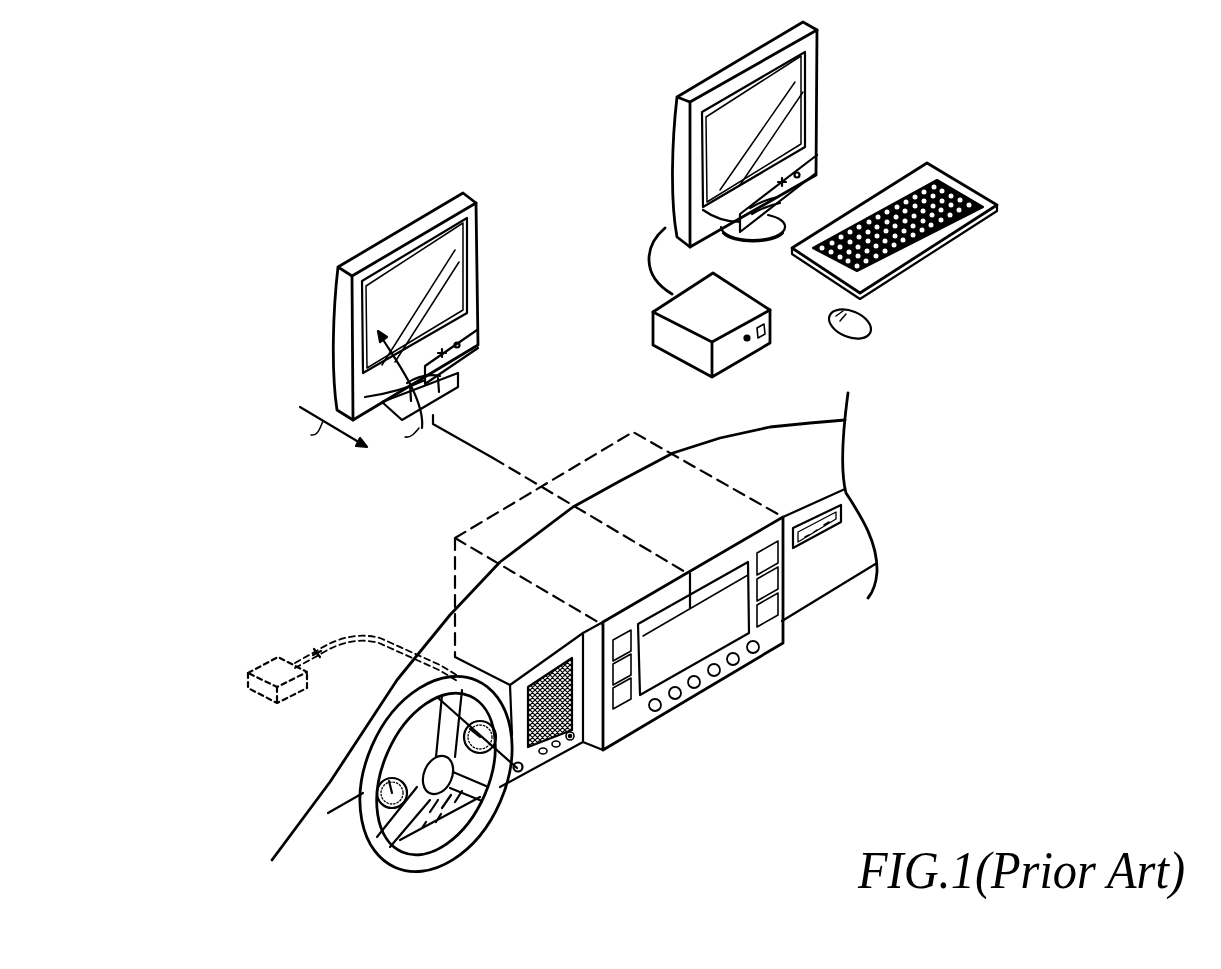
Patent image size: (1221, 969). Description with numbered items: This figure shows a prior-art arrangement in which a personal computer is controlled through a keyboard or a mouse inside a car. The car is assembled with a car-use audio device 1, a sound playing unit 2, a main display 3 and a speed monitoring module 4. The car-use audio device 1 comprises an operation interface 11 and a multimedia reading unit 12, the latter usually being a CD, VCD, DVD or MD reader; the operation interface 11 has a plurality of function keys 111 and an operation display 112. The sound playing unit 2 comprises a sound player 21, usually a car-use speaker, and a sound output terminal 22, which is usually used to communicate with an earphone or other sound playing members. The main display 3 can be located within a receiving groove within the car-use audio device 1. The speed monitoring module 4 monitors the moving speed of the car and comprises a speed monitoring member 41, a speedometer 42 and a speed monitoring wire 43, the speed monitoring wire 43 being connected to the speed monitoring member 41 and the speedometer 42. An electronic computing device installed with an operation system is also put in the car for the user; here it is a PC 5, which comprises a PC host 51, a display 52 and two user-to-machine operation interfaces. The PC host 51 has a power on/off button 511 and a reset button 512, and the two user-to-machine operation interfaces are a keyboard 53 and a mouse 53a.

The car-use audio device 1 is at (870, 437).
The operation interface 11 is at (835, 664).
The function keys 111 is at (741, 664).
The operation display 112 is at (752, 633).
The multimedia reading unit 12 is at (825, 528).
The sound playing unit 2 is at (616, 762).
The sound player 21 is at (554, 753).
The sound output terminal 22 is at (571, 741).
The main display 3 is at (468, 194).
The speed monitoring module 4 is at (228, 664).
The speed monitoring member 41 is at (263, 700).
The speedometer 42 is at (497, 790).
The speed monitoring wire 43 is at (384, 642).
The PC 5 is at (968, 99).
The PC host 51 is at (735, 292).
The power on/off button 511 is at (766, 339).
The reset button 512 is at (748, 342).
The display 52 is at (812, 119).
The keyboard 53 is at (928, 171).
The mouse 53a is at (836, 317).